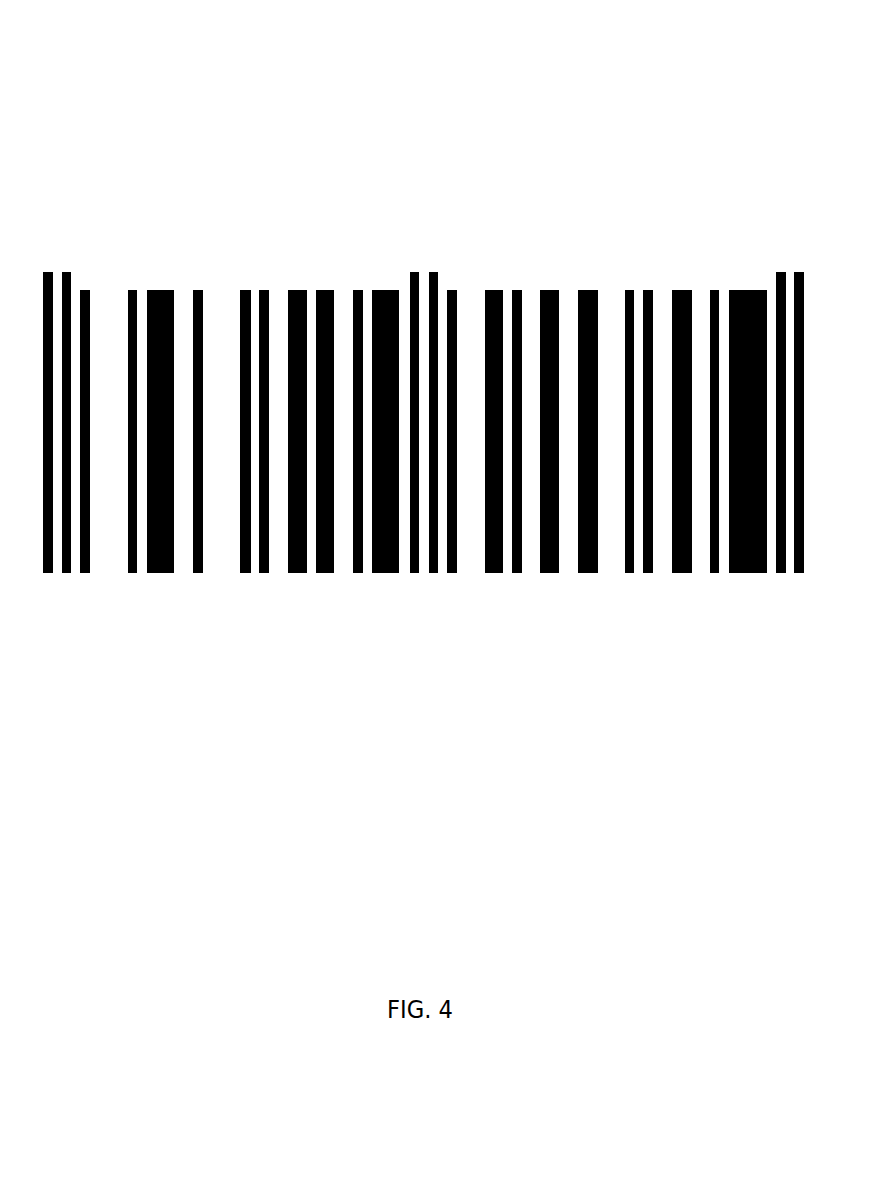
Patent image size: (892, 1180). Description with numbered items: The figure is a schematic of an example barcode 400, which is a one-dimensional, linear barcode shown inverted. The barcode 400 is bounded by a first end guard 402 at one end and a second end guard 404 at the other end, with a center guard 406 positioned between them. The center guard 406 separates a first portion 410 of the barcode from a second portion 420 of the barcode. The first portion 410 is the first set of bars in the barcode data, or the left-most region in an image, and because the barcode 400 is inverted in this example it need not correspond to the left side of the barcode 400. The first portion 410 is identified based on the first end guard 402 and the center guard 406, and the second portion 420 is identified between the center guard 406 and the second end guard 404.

The barcode 400 is at (206, 62).
The first end guard 402 is at (72, 272).
The second end guard 404 is at (806, 272).
The center guard 406 is at (447, 272).
The first portion 410 is at (90, 591).
The second portion 420 is at (465, 591).